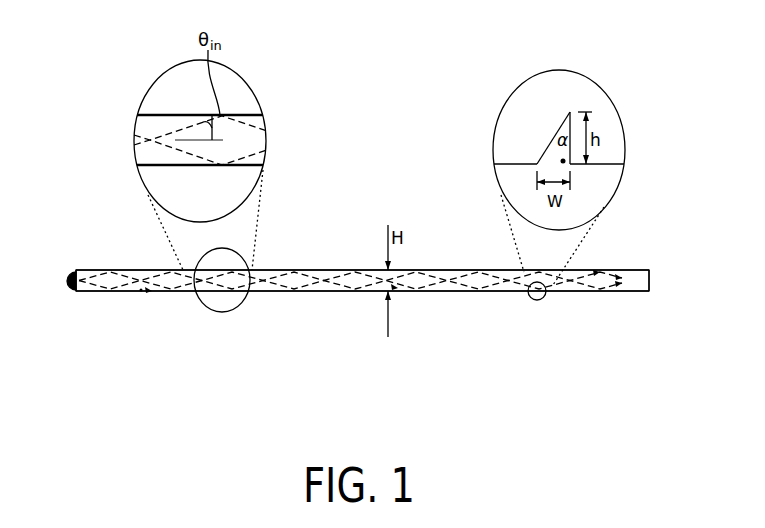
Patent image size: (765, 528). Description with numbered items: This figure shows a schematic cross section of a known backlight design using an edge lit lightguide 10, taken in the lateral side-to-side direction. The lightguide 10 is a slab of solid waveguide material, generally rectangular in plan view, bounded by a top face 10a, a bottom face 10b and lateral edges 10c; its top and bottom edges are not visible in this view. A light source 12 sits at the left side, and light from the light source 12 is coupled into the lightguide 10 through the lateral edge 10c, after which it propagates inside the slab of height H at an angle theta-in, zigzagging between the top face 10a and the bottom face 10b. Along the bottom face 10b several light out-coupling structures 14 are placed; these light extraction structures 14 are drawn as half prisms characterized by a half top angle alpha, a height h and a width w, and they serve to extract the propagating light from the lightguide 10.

The edge lit lightguide 10 is at (123, 247).
The light source 12 is at (72, 274).
The top face 10a is at (437, 270).
The bottom face 10b is at (327, 292).
The lateral edges 10c is at (80, 292).
The light out-coupling structures 14 is at (548, 148).